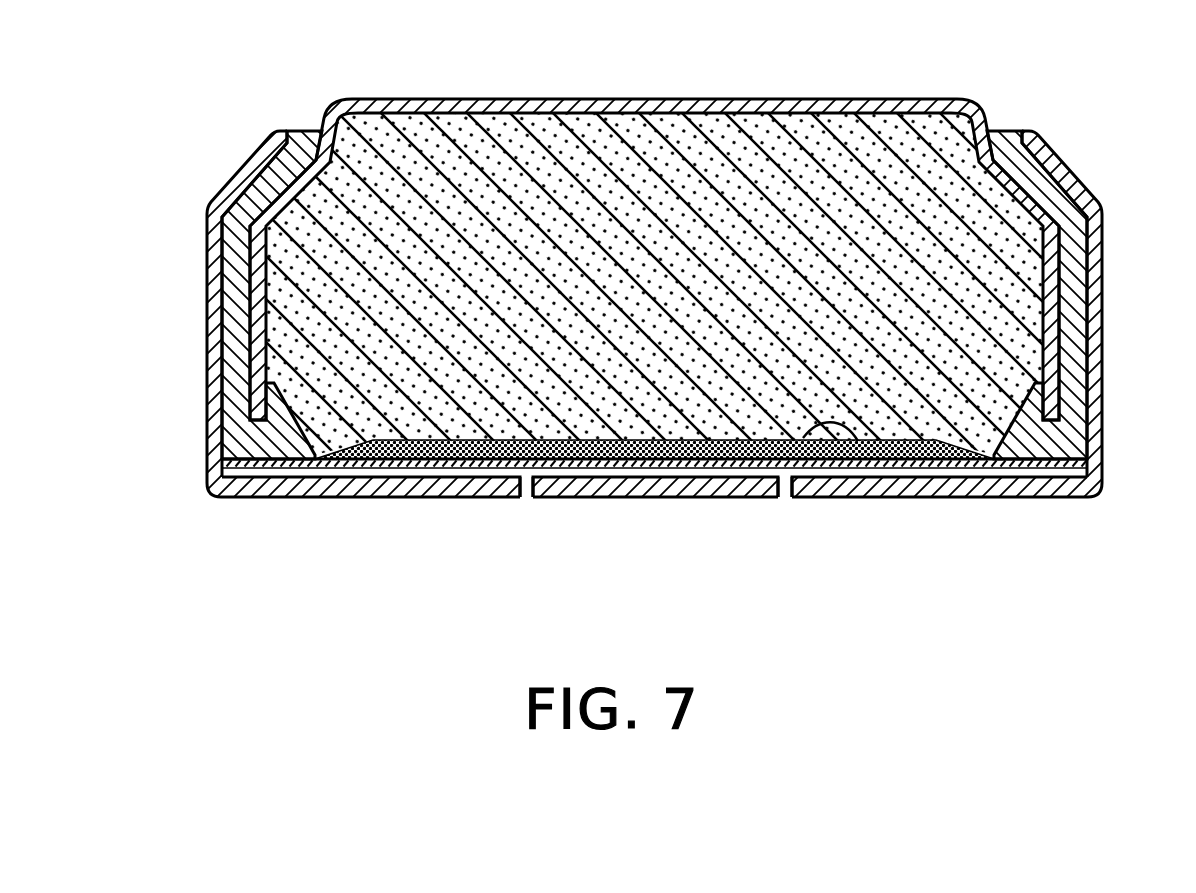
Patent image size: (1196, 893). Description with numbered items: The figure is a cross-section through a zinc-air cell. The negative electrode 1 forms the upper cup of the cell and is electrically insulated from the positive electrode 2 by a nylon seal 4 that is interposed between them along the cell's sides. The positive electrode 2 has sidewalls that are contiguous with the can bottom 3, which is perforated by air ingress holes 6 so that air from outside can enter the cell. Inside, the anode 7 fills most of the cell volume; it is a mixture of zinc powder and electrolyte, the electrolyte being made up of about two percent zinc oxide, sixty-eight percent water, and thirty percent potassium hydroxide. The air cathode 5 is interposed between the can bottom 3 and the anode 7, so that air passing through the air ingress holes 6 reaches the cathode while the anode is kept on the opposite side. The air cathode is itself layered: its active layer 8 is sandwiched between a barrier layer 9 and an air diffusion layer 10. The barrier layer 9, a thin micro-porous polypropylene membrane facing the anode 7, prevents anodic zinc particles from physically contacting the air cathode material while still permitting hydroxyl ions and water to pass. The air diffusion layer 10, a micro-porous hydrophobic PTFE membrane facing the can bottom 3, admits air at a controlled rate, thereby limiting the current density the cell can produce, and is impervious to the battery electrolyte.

The negative electrode 1 is at (532, 99).
The positive electrode 2 is at (207, 270).
The can bottom 3 is at (1003, 497).
The nylon seal 4 is at (308, 131).
The air cathode 5 is at (690, 466).
The air ingress holes 6 is at (527, 497).
The anode 7 is at (763, 172).
The active layer 8 is at (425, 459).
The barrier layer 9 is at (858, 441).
The air diffusion layer 10 is at (460, 468).